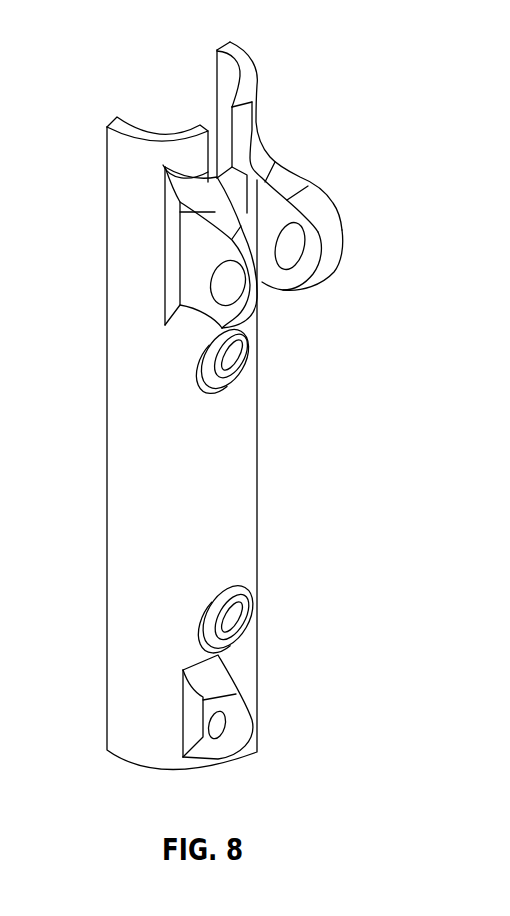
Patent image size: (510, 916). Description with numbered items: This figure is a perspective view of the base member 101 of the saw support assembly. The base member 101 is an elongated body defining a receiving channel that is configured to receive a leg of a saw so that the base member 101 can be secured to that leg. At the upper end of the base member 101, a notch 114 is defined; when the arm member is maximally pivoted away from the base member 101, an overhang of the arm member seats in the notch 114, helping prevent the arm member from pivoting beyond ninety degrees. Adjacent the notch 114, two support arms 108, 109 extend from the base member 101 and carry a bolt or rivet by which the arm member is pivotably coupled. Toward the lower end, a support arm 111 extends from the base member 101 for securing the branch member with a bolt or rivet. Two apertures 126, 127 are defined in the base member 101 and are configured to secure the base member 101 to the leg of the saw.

The base member 101 is at (120, 443).
The notch 114 is at (198, 103).
The support arm 109 is at (333, 238).
The support arm 108 is at (267, 288).
The aperture 127 is at (242, 367).
The aperture 126 is at (243, 631).
The support arm 111 is at (240, 715).